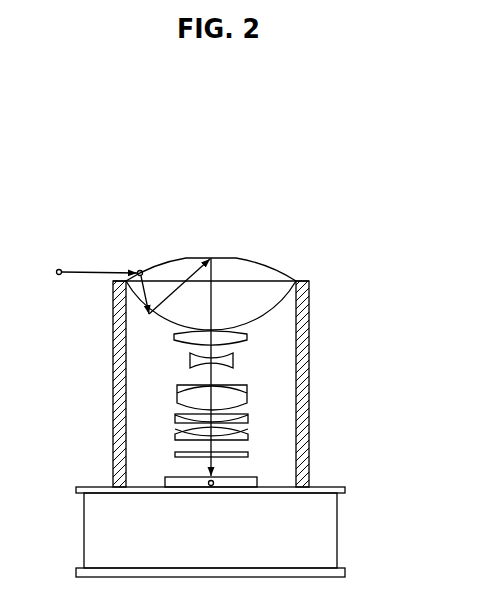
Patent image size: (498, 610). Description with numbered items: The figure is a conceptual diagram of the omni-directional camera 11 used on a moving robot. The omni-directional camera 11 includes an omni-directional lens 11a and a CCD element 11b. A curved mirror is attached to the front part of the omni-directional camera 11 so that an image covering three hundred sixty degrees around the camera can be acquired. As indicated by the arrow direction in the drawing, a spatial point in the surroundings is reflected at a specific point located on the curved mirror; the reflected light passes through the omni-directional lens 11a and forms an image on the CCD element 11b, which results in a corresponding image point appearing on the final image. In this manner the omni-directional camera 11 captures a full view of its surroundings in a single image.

The omni-directional camera 11 is at (222, 181).
The omni-directional lens 11a is at (311, 343).
The CCD element 11b is at (248, 482).